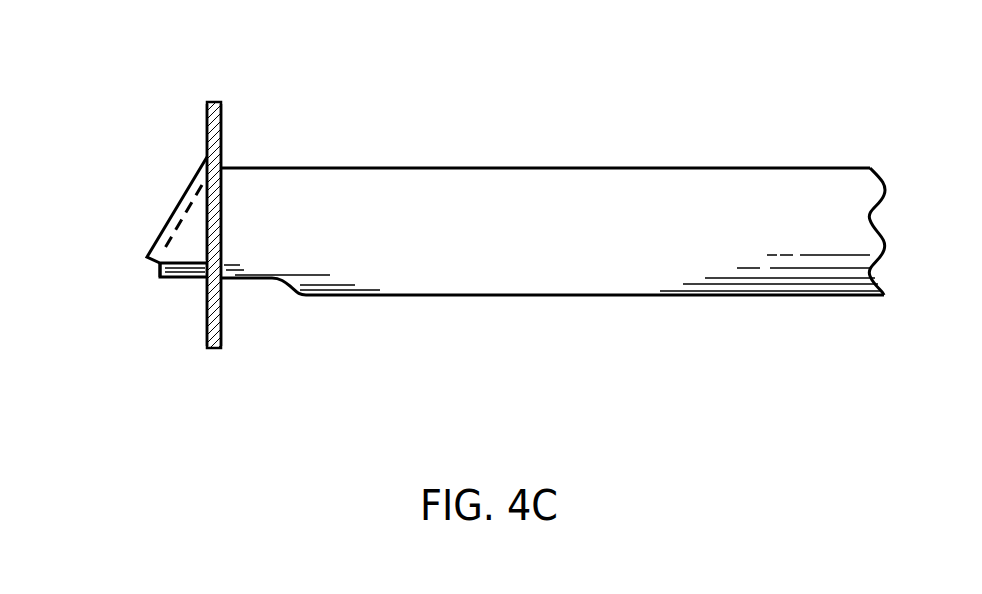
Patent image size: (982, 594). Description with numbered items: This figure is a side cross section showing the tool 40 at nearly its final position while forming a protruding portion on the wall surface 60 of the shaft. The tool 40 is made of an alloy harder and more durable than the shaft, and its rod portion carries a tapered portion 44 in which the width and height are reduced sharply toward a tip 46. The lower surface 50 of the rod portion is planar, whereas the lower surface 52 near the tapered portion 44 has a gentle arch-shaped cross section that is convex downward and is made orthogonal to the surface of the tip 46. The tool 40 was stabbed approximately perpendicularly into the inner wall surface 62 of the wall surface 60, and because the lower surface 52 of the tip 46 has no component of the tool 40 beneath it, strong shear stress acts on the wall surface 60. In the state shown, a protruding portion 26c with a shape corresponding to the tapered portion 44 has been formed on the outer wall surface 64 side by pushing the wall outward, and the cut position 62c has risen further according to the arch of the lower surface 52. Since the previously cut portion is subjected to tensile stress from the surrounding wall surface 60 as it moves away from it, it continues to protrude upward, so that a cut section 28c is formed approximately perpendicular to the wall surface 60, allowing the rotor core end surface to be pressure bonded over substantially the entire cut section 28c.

The tool 40 is at (701, 167).
The tapered portion 44 is at (185, 195).
The tip 46 is at (158, 278).
The lower surface 50 is at (440, 295).
The lower surface near the tapered portion 52 is at (229, 273).
The wall surface 60 is at (221, 92).
The inner wall surface 62 is at (223, 118).
The outer wall surface 64 is at (207, 132).
The protruding portion 26c is at (147, 252).
The cut section 28c is at (160, 273).
The cut position 62c is at (207, 263).